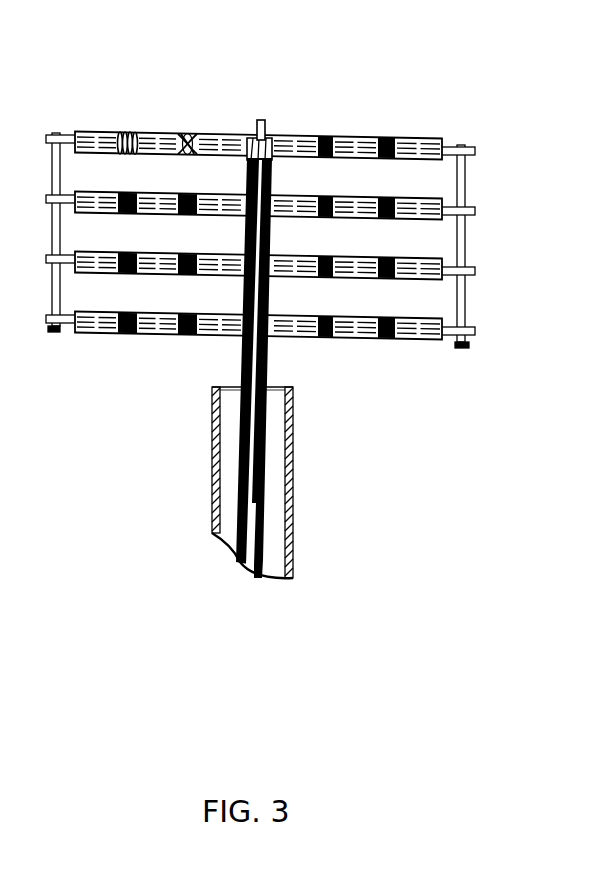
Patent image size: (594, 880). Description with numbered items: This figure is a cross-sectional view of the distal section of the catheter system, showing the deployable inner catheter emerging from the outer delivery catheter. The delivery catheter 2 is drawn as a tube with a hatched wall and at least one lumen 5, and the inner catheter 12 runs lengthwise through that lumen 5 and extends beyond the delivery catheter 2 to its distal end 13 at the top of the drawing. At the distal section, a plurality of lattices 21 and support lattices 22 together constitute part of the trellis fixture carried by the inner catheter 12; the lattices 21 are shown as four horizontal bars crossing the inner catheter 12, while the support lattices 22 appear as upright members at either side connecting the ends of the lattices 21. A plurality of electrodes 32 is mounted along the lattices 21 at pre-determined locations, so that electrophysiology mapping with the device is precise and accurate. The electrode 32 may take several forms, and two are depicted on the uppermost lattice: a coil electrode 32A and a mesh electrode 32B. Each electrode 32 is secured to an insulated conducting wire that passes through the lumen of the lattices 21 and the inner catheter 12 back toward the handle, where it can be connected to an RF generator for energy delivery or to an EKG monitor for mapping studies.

The delivery catheter 2 is at (295, 517).
The lumen 5 is at (277, 438).
The inner catheter 12 is at (268, 363).
The distal end 13 is at (268, 118).
The lattices 21 is at (395, 132).
The support lattices 22 is at (472, 177).
The electrode 32 is at (332, 134).
The coil electrode 32A is at (135, 128).
The mesh electrode 32B is at (195, 127).